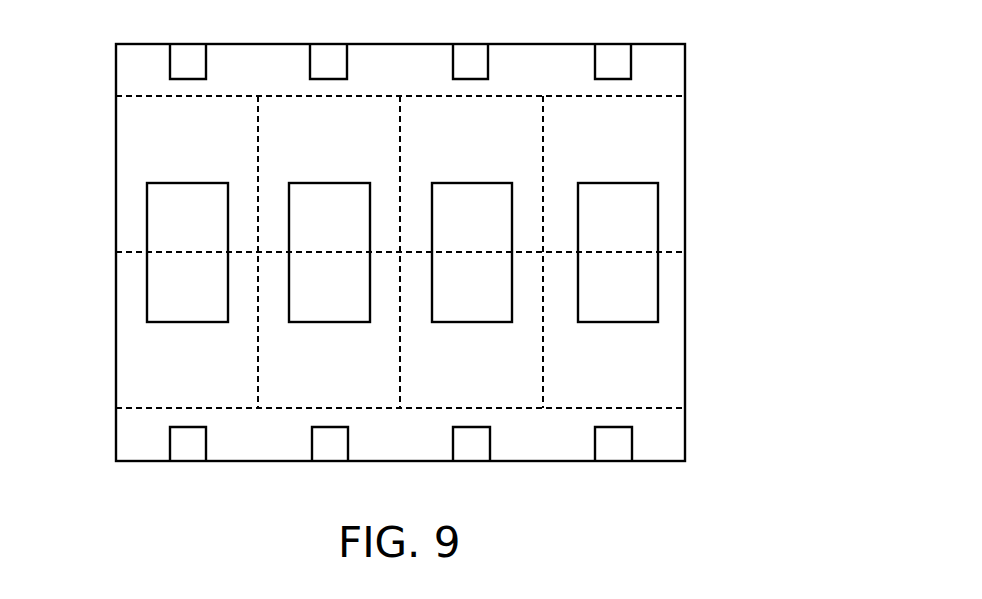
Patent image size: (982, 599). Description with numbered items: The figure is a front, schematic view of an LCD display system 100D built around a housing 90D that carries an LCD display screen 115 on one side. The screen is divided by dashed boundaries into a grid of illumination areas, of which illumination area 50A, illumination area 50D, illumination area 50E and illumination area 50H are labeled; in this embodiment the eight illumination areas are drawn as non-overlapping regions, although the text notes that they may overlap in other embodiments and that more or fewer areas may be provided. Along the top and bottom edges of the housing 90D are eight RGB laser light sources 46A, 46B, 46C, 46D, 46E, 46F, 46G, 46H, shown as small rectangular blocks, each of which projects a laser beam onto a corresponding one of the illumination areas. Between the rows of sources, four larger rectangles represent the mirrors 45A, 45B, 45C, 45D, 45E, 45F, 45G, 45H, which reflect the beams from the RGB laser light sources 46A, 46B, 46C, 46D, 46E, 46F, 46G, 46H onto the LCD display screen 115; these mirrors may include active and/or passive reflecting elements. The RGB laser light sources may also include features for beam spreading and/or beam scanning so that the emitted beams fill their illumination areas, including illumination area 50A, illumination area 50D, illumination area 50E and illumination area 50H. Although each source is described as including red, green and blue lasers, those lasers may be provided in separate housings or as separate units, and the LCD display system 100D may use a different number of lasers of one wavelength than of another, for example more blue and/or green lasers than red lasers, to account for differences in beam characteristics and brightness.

The LCD display system 100D is at (764, 94).
The housing 90D is at (116, 120).
The LCD display screen 115 is at (116, 286).
The illumination area 50A is at (667, 149).
The illumination area 50D is at (133, 157).
The illumination area 50E is at (656, 358).
The illumination area 50H is at (125, 364).
The mirror 45A is at (658, 305).
The mirror 45B is at (463, 305).
The mirror 45C is at (320, 305).
The mirror 45D is at (179, 305).
The mirror 45E is at (658, 218).
The mirror 45F is at (466, 200).
The mirror 45G is at (323, 200).
The mirror 45H is at (183, 200).
The RGB laser light source 46A is at (632, 443).
The RGB laser light source 46B is at (470, 444).
The RGB laser light source 46C is at (330, 444).
The RGB laser light source 46D is at (188, 444).
The RGB laser light source 46E is at (631, 62).
The RGB laser light source 46F is at (470, 60).
The RGB laser light source 46G is at (329, 60).
The RGB laser light source 46H is at (187, 60).